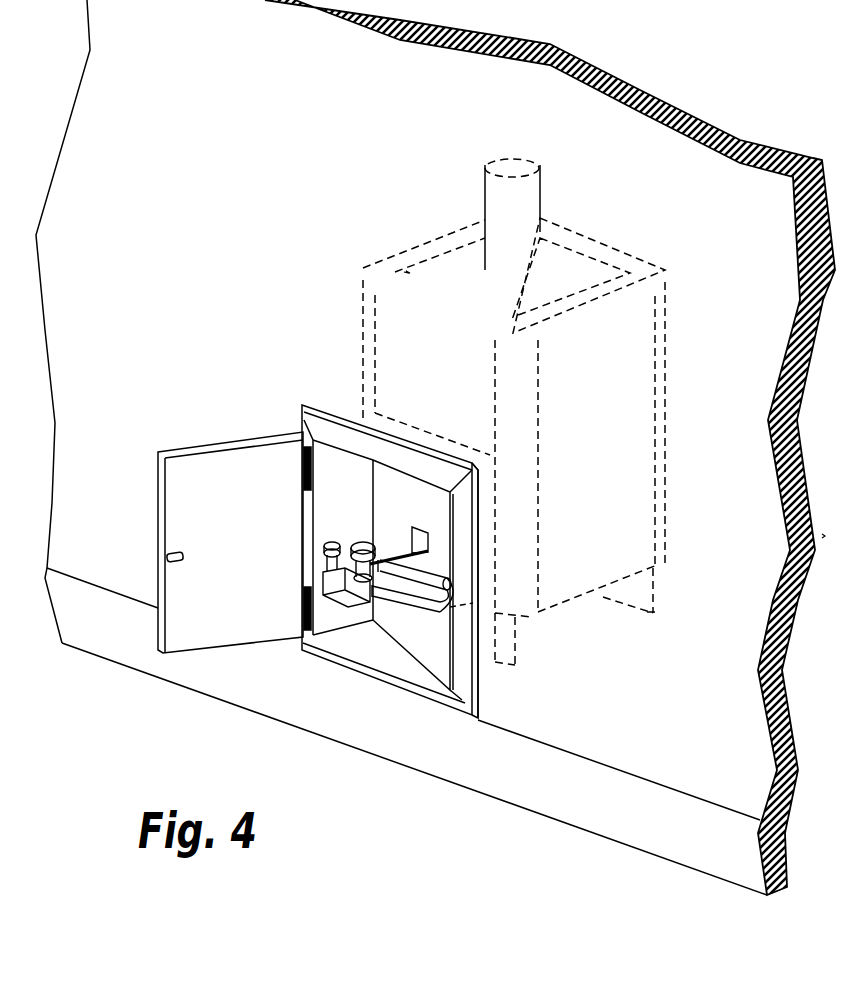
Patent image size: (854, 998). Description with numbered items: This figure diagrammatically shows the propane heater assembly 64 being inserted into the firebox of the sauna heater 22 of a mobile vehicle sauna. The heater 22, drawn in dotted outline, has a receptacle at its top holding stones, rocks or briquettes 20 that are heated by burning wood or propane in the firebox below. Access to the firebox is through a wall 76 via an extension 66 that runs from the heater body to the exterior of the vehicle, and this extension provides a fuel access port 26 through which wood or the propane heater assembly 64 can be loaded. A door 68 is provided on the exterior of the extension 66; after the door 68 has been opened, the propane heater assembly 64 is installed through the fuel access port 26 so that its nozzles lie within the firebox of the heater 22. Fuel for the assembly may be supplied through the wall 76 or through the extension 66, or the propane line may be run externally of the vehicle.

The stones, rocks or briquettes 20 is at (577, 257).
The heater 22 is at (672, 375).
The fuel access port 26 is at (390, 530).
The propane heater assembly 64 is at (408, 616).
The extension 66 is at (488, 528).
The door 68 is at (257, 440).
The wall 76 is at (356, 500).